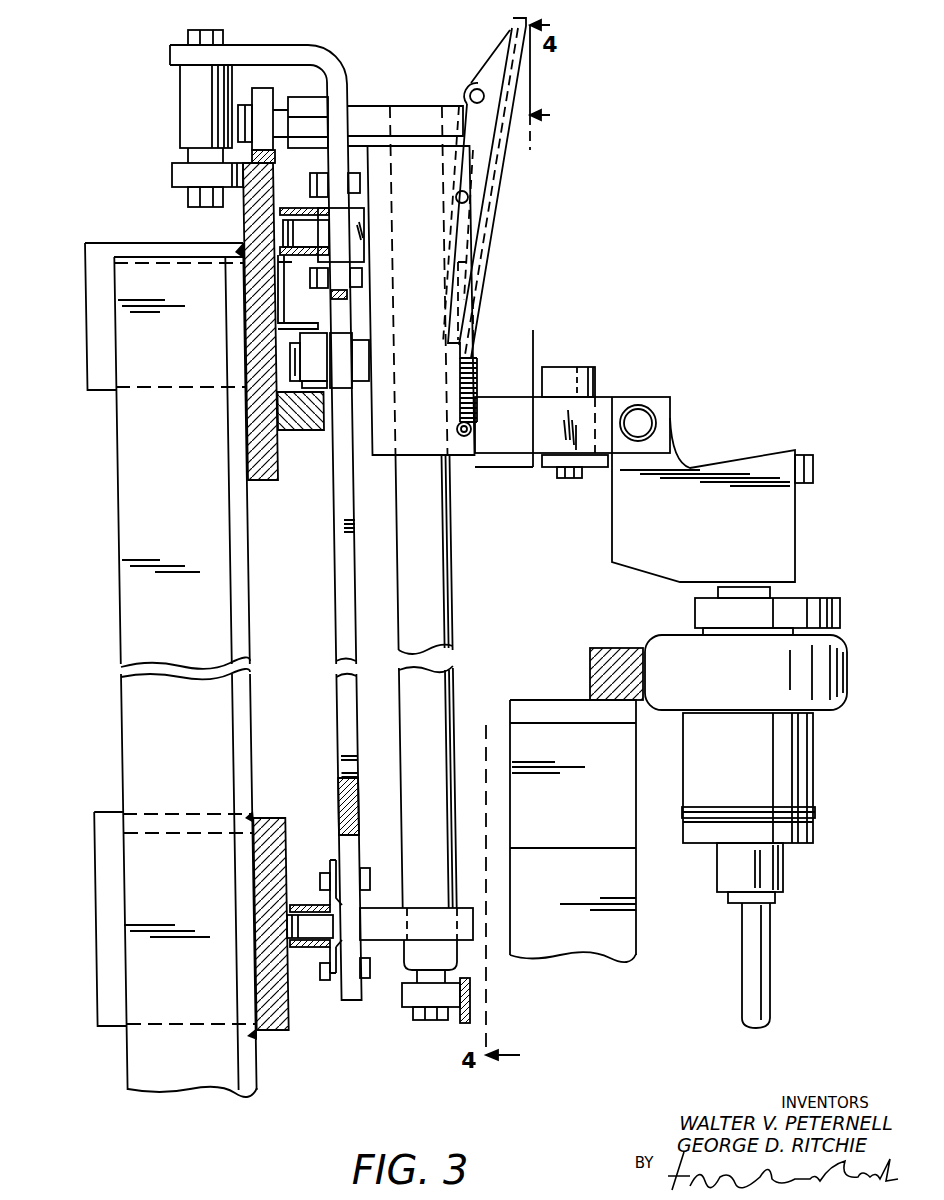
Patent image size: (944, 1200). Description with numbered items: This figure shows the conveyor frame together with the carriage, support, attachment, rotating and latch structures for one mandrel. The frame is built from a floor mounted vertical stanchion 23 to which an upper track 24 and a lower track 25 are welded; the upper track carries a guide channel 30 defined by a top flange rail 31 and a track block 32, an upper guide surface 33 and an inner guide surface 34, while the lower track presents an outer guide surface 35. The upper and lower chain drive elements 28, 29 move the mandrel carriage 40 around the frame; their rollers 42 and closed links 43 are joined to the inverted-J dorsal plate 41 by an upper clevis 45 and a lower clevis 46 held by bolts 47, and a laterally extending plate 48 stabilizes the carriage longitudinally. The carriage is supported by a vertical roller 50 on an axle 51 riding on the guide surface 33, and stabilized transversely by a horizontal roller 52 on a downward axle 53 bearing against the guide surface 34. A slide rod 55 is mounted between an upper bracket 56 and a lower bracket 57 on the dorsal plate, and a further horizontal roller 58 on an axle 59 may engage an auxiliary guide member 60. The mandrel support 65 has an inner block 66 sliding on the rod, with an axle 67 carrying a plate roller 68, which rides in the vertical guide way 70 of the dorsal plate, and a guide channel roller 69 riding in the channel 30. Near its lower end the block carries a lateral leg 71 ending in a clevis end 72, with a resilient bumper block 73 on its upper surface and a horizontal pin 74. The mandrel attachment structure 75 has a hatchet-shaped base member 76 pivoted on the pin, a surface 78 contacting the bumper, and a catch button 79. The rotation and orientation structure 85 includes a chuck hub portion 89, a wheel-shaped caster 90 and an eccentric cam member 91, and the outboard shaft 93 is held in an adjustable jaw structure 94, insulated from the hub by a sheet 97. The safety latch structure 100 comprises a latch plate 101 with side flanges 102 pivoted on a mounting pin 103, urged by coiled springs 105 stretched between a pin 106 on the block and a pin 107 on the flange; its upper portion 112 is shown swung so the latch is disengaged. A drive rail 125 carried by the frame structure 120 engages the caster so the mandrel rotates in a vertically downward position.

The vertical stanchion element 23 is at (258, 1056).
The upper horizontal track element 24 is at (273, 480).
The lower horizontal track element 25 is at (283, 818).
The upper conveyor drive element 28 is at (243, 258).
The lower conveyor drive element 29 is at (286, 952).
The guide channel 30 is at (292, 361).
The top flange rail 31 is at (286, 292).
The track block 32 is at (311, 432).
The guide surface 33 is at (276, 156).
The guide surface 34 is at (243, 209).
The guide surface 35 is at (289, 1000).
The mandrel carriage 40 is at (331, 586).
The dorsal plate 41 is at (285, 45).
The roller 42 is at (283, 233).
The closed link 43 is at (329, 212).
The upper clevis 45 is at (310, 186).
The lower clevis 46 is at (332, 864).
The bolt 47 is at (360, 186).
The laterally extending plate 48 is at (343, 237).
The vertical roller 50 is at (266, 92).
The axle 51 is at (290, 125).
The horizontal roller 52 is at (172, 178).
The axle 53 is at (185, 156).
The slide rod 55 is at (453, 599).
The upper bracket 56 is at (375, 113).
The lower bracket 57 is at (461, 908).
The horizontal roller 58 is at (405, 997).
The axle 59 is at (420, 980).
The auxiliary guide member 60 is at (462, 1023).
The mandrel support 65 is at (409, 461).
The inner block 66 is at (406, 421).
The axle 67 is at (369, 361).
The plate roller 68 is at (346, 342).
The guide channel roller 69 is at (305, 340).
The vertical guide way 70 is at (337, 712).
The lateral leg 71 is at (485, 403).
The clevis end 72 is at (620, 398).
The resilient bumper block 73 is at (591, 369).
The horizontal pin 74 is at (656, 421).
The mandrel attachment structure 75 is at (808, 527).
The base member 76 is at (624, 510).
The surface 78 is at (758, 455).
The button or catch element 79 is at (813, 472).
The mandrel rotation and orientation structure 85 is at (830, 762).
The hub portion 89 is at (815, 793).
The caster 90 is at (850, 660).
The eccentric cam member 91 is at (842, 613).
The outboard shaft 93 is at (742, 985).
The adjustable jaw structure 94 is at (788, 873).
The insulating sheet 97 is at (815, 820).
The safety latch structure 100 is at (552, 116).
The latch plate 101 is at (503, 159).
The side flange 102 is at (500, 50).
The mounting pin 103 is at (456, 198).
The coiled spring 105 is at (486, 302).
The pin 106 is at (472, 428).
The pin 107 is at (475, 89).
The upper portion of latch plate 112 is at (550, 25).
The frame structure 120 is at (612, 793).
The drive rail 125 is at (590, 670).